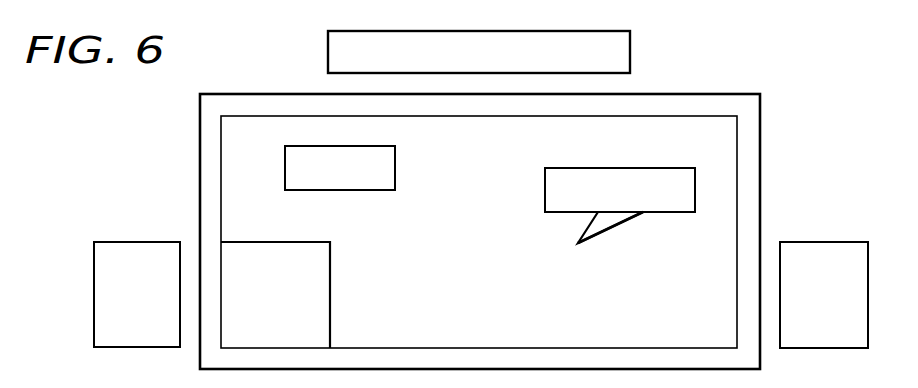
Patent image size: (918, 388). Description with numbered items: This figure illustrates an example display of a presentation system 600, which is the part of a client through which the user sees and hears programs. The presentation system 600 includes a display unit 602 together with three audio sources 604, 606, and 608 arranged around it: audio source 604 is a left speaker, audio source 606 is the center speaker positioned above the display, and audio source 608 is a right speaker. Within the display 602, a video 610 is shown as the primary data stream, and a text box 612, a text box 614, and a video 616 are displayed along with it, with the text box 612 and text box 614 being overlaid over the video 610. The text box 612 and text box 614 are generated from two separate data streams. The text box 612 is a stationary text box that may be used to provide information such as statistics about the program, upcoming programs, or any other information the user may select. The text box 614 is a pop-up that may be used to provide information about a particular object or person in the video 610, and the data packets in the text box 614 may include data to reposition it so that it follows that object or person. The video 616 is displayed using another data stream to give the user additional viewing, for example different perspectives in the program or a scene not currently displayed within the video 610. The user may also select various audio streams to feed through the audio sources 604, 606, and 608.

The presentation system 600 is at (136, 114).
The display unit 602 is at (685, 93).
The audio source 604 is at (156, 326).
The audio source 606 is at (328, 53).
The audio source 608 is at (844, 327).
The video 610 is at (502, 316).
The text box 612 is at (360, 180).
The text box 614 is at (640, 201).
The video 616 is at (297, 306).